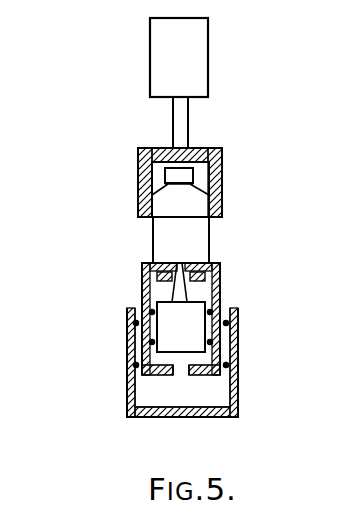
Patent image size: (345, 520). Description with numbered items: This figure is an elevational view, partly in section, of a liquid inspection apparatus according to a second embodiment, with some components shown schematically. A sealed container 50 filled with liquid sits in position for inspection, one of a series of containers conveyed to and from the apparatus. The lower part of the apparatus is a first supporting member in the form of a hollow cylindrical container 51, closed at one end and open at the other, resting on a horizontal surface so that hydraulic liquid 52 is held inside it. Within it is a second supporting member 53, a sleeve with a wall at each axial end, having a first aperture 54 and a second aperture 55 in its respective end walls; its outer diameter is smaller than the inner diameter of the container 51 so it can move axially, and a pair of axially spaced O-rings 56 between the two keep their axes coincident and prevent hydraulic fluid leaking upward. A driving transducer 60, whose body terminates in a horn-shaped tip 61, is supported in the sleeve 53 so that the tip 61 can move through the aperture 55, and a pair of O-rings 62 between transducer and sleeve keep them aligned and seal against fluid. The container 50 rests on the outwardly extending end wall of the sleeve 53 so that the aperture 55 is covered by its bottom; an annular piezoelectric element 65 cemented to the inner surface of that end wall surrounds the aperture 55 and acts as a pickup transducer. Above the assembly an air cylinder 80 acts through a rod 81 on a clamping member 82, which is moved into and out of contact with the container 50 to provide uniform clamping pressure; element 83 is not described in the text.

The sealed container 50 is at (198, 237).
The hollow cylindrical container 51 is at (238, 411).
The hydraulic liquid 52 is at (158, 395).
The second supporting member 53 is at (221, 281).
The first aperture 54 is at (184, 372).
The second aperture 55 is at (186, 266).
The O-rings 56 is at (136, 365).
The driving transducer 60 is at (181, 327).
The horn-shaped tip 61 is at (182, 291).
The O-rings 62 is at (125, 341).
The piezoelectric element 65 is at (172, 272).
The air cylinder 80 is at (194, 33).
The rod 81 is at (182, 108).
The clamping member 82 is at (211, 147).
The insert 83 is at (215, 178).